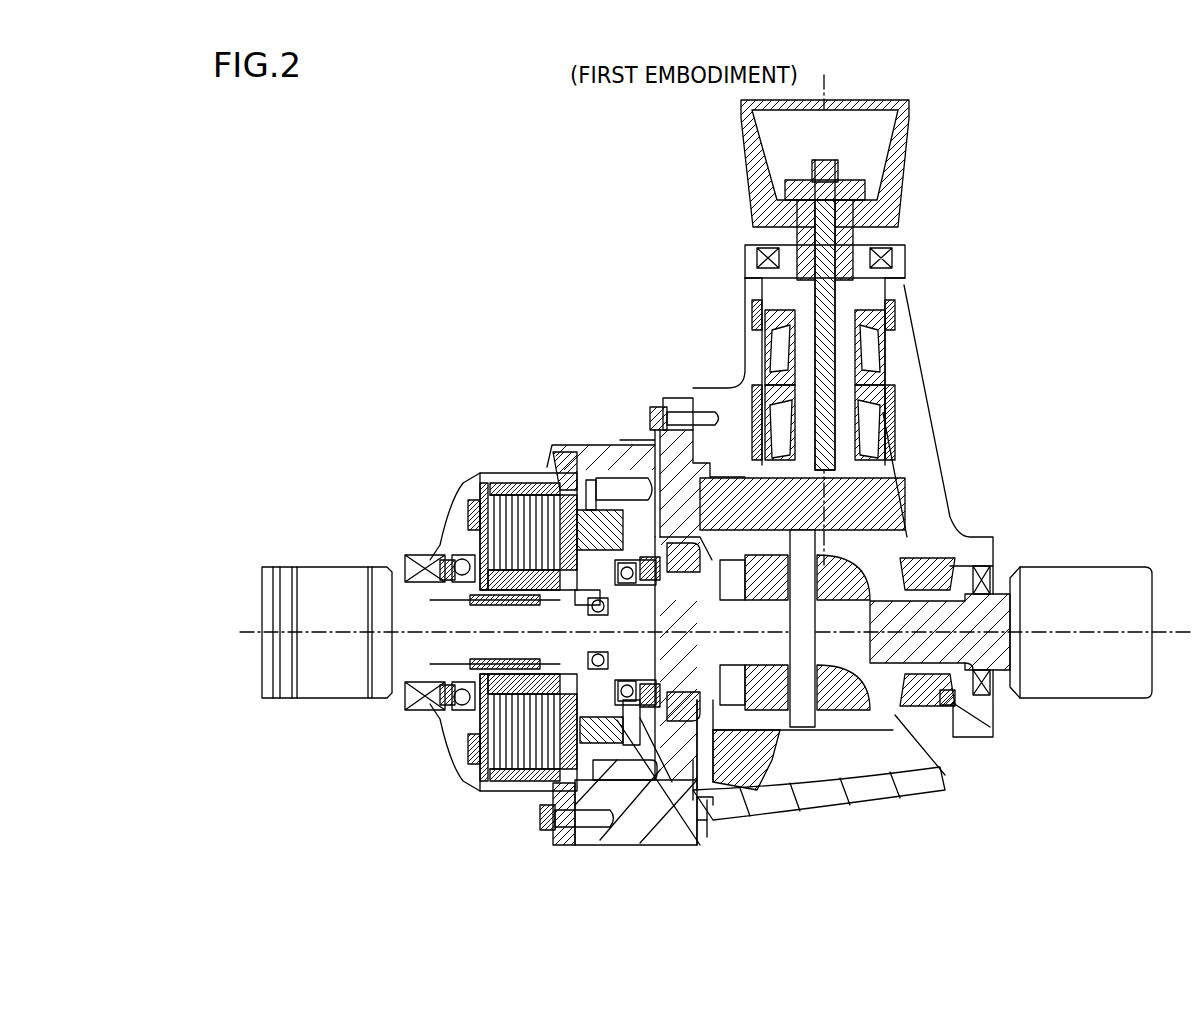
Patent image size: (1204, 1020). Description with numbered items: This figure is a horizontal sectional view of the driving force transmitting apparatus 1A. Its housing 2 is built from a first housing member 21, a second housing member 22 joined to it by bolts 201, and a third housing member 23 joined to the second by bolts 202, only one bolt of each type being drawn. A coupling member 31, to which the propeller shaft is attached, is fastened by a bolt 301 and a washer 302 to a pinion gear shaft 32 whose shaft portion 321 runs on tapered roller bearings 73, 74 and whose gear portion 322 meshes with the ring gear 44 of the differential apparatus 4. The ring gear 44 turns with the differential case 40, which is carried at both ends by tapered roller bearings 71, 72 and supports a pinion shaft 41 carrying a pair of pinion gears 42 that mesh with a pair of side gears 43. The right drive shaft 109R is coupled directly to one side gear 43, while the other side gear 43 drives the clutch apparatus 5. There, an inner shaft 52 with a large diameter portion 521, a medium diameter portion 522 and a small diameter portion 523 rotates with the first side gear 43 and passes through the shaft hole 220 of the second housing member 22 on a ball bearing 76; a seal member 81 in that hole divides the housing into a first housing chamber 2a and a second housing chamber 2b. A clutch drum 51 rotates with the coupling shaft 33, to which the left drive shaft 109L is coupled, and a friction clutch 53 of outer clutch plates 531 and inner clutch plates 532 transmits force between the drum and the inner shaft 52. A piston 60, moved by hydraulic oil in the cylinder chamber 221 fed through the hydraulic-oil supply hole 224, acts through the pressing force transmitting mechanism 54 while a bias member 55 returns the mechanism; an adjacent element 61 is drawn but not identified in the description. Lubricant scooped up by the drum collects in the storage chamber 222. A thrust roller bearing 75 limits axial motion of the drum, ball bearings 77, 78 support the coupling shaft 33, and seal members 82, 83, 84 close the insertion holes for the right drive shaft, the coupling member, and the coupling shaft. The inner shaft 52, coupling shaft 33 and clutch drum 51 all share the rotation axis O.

The driving force transmitting apparatus 1A is at (990, 210).
The housing 2 is at (680, 876).
The first housing chamber 2a is at (470, 770).
The second housing chamber 2b is at (905, 745).
The first housing member 21 is at (700, 840).
The second housing member 22 is at (650, 838).
The third housing member 23 is at (570, 845).
The bolt 201 is at (672, 398).
The bolt 202 is at (548, 830).
The shaft hole 220 is at (643, 712).
The cylinder chamber 221 is at (712, 800).
The storage chamber 222 is at (705, 822).
The hydraulic-oil supply hole 224 is at (652, 440).
The coupling member 31 is at (905, 150).
The bolt 301 is at (812, 168).
The washer 302 is at (786, 190).
The pinion gear shaft 32 is at (988, 386).
The shaft portion 321 is at (866, 430).
The gear portion 322 is at (848, 450).
The coupling shaft 33 is at (415, 695).
The differential apparatus 4 is at (945, 565).
The differential case 40 is at (895, 560).
The pinion shaft 41 is at (805, 715).
The pinion gear 42 is at (880, 555).
The side gear 43 is at (778, 710).
The ring gear 44 is at (760, 770).
The clutch apparatus 5 is at (500, 483).
The clutch drum 51 is at (488, 480).
The inner shaft 52 is at (520, 675).
The large diameter portion 521 is at (525, 604).
The medium diameter portion 522 is at (668, 610).
The small diameter portion 523 is at (735, 602).
The friction clutch 53 is at (528, 483).
The outer clutch plate 531 is at (525, 781).
The inner clutch plate 532 is at (500, 781).
The pressing force transmitting mechanism 54 is at (565, 455).
The bias member 55 is at (605, 598).
The piston 60 is at (603, 510).
The cam member 61 is at (590, 480).
The tapered roller bearing 71 is at (990, 565).
The tapered roller bearing 72 is at (685, 575).
The tapered roller bearing 73 is at (775, 345).
The tapered roller bearing 74 is at (775, 430).
The thrust roller bearing 75 is at (468, 508).
The ball bearing 76 is at (610, 662).
The ball bearing 77 is at (580, 600).
The ball bearing 78 is at (460, 557).
The seal member 81 is at (634, 580).
The seal member 82 is at (992, 696).
The seal member 83 is at (885, 250).
The seal member 84 is at (447, 582).
The drive shaft 109L is at (378, 567).
The drive shaft 109R is at (1098, 567).
The rotation axis O is at (1160, 632).